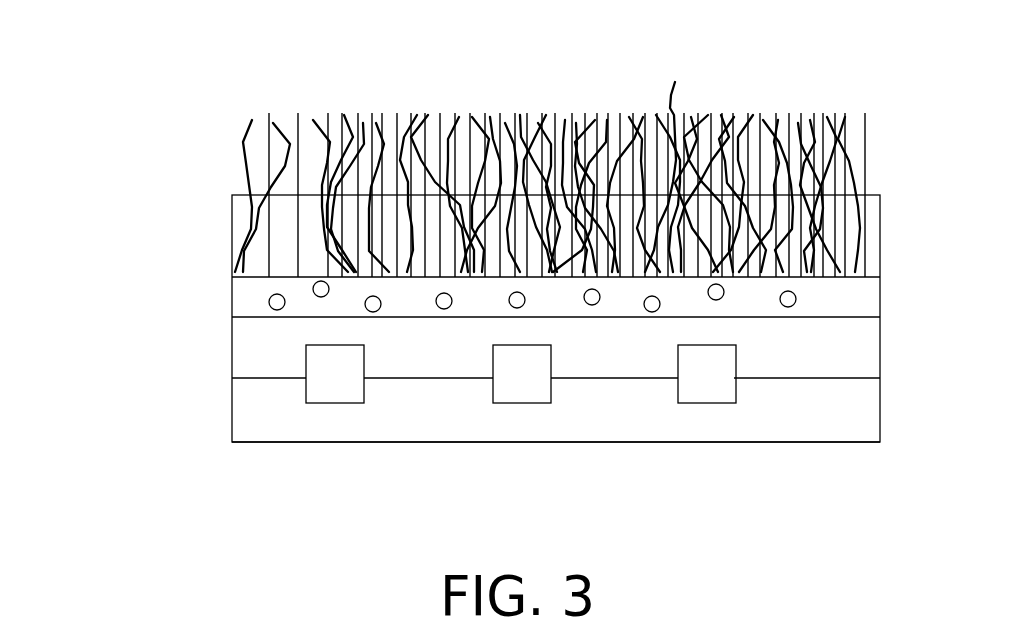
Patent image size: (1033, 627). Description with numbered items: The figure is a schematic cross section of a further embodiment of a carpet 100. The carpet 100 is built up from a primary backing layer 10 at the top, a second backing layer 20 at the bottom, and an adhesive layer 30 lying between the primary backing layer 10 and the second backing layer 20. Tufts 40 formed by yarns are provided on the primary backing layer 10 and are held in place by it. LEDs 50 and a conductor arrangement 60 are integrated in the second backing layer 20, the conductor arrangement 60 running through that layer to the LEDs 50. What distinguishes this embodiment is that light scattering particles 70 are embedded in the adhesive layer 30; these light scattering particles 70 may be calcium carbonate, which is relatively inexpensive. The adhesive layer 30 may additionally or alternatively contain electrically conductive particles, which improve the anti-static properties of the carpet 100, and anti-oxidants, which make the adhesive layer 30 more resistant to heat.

The carpet 100 is at (160, 79).
The primary backing layer 10 is at (240, 218).
The second backing layer 20 is at (240, 412).
The adhesive layer 30 is at (240, 302).
The tufts 40 is at (550, 162).
The LEDs 50 is at (722, 358).
The conductor arrangement 60 is at (852, 378).
The light scattering particles 70 is at (797, 299).